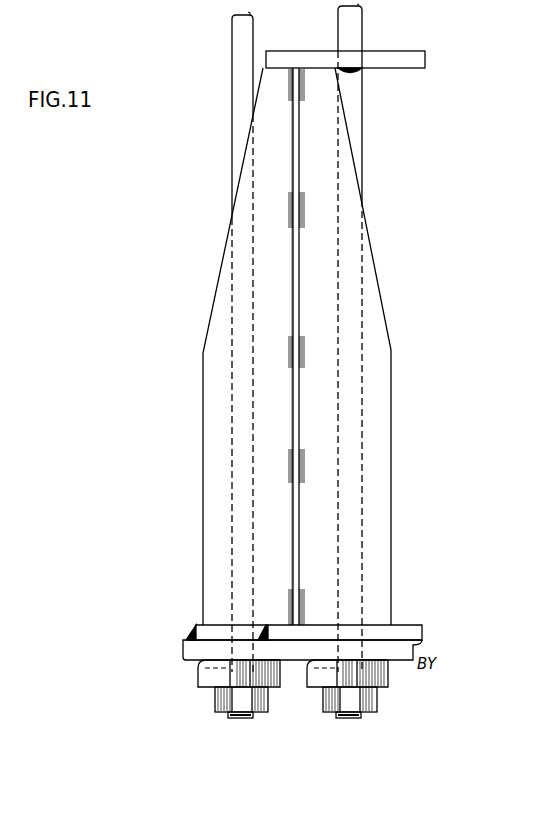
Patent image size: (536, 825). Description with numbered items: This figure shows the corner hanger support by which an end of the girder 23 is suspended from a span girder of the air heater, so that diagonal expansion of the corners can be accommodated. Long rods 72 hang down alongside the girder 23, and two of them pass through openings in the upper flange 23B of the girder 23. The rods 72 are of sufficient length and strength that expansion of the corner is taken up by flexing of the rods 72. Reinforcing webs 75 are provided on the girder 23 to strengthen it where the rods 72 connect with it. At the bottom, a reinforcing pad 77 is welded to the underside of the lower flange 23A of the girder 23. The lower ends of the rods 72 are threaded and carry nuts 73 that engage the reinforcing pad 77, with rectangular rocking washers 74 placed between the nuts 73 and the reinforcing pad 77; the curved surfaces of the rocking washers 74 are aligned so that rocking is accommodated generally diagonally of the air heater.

The rods 72 is at (350, 38).
The upper flange 23B is at (403, 65).
The girder 23 is at (298, 243).
The reinforcing webs 75 is at (370, 417).
The lower flange 23A is at (282, 632).
The reinforcing pad 77 is at (193, 647).
The rocking washers 74 is at (210, 670).
The nuts 73 is at (323, 694).